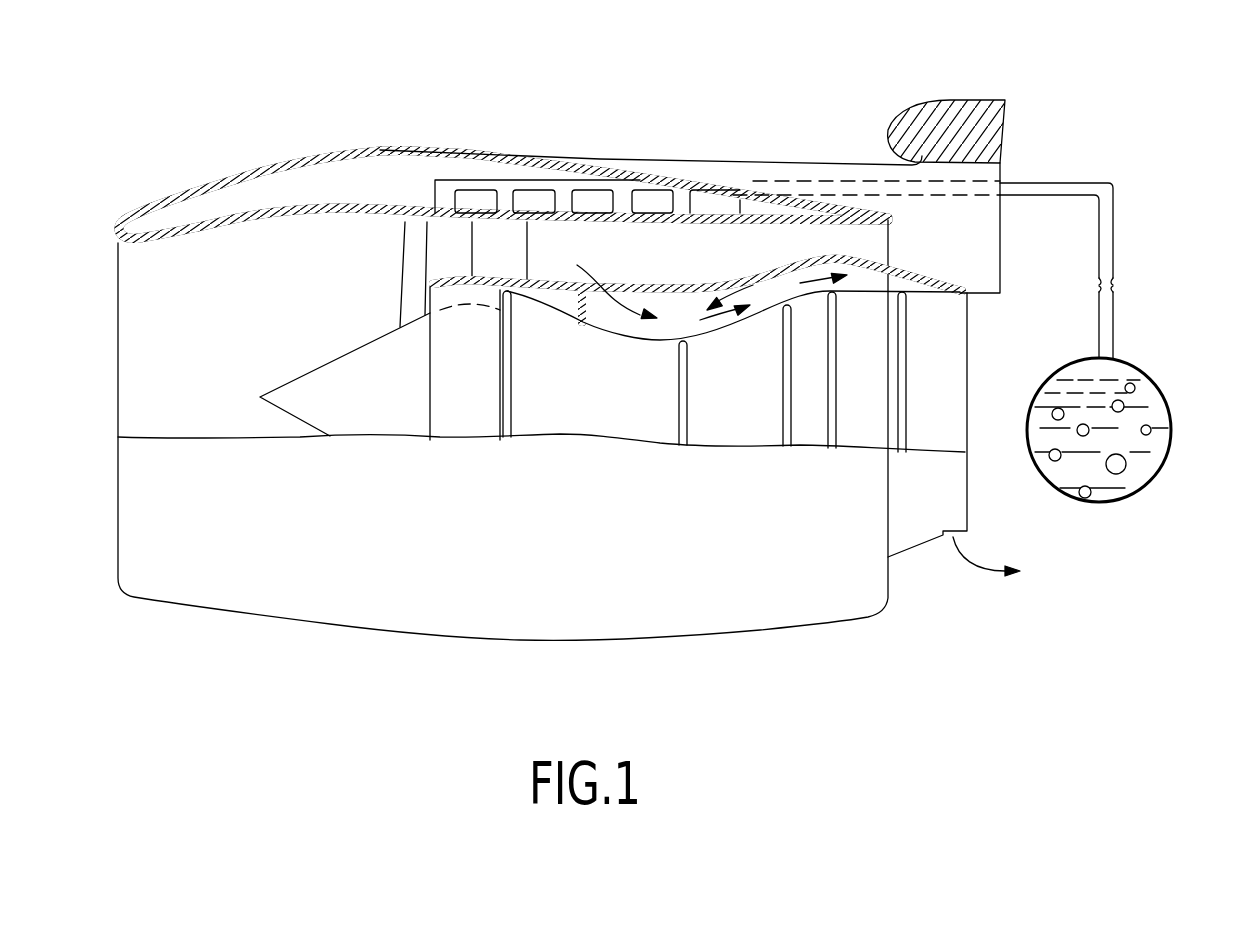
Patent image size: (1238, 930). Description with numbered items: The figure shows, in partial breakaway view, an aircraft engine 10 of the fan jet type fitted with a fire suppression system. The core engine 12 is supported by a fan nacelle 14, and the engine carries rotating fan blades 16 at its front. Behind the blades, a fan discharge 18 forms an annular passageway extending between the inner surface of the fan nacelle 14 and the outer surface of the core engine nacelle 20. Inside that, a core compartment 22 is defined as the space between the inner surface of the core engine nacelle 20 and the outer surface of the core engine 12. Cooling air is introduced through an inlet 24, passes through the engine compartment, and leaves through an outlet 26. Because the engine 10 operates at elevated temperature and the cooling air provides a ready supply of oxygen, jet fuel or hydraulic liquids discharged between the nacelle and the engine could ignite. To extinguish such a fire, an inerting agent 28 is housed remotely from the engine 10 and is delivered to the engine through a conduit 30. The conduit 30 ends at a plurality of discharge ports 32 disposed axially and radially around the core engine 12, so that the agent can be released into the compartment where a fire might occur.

The aircraft engine 10 is at (727, 60).
The core engine 12 is at (668, 330).
The fan nacelle 14 is at (236, 160).
The fan blades 16 is at (388, 284).
The fan discharge 18 is at (812, 242).
The core engine nacelle 20 is at (905, 572).
The core compartment 22 is at (735, 284).
The inlet 24 is at (614, 282).
The outlet 26 is at (955, 538).
The inerting agent 28 is at (1131, 440).
The conduit 30 is at (1113, 230).
The discharge ports 32 is at (440, 197).